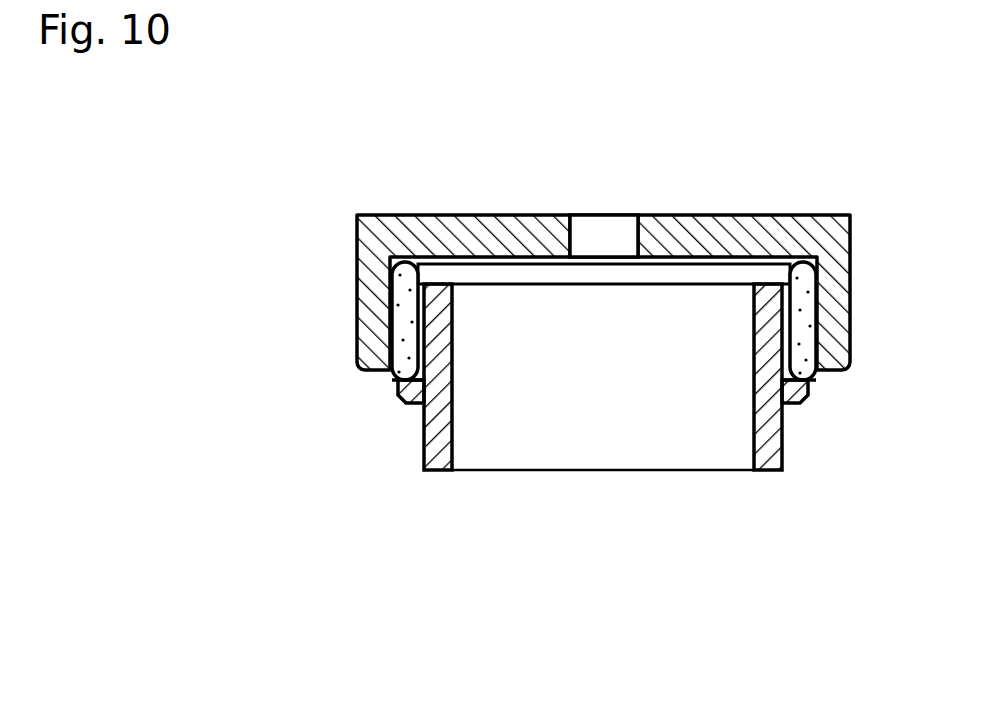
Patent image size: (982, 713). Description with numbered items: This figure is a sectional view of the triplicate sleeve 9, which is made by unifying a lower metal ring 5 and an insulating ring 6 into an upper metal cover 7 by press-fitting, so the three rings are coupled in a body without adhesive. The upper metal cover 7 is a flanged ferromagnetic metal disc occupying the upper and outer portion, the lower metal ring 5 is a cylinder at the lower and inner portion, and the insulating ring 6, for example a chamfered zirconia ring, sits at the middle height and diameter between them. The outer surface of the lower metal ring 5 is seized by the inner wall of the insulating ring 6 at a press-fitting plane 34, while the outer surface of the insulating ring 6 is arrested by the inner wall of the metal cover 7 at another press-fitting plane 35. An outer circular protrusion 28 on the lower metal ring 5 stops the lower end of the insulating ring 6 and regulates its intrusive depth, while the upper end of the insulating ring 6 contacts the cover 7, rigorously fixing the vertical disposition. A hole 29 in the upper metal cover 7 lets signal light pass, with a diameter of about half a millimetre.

The triplicate sleeve 9 is at (445, 184).
The hole 29 is at (588, 256).
The upper metal cover 7 is at (388, 248).
The press-fitting plane 35 is at (400, 317).
The press-fitting plane 34 is at (398, 343).
The insulating ring 6 is at (397, 377).
The outer circular protrusion 28 is at (412, 397).
The lower metal ring 5 is at (437, 472).